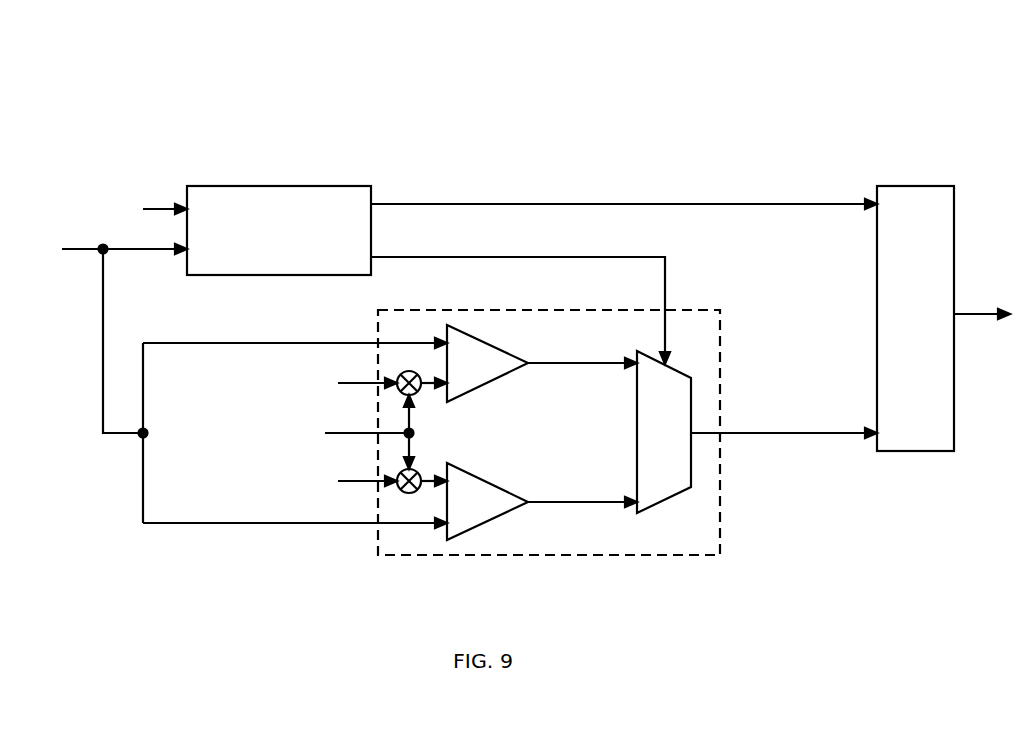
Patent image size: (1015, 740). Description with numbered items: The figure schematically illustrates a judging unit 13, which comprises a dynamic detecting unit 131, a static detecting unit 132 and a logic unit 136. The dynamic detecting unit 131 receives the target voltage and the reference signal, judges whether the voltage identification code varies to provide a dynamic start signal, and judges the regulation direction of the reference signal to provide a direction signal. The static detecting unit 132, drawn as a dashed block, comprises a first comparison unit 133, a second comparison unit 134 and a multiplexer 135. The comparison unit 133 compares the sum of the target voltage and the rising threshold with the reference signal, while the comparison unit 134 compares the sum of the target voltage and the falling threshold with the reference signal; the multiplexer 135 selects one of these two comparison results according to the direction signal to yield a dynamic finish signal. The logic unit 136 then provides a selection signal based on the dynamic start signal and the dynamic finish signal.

The judging unit 13 is at (868, 73).
The dynamic detecting unit 131 is at (261, 269).
The static detecting unit 132 is at (673, 309).
The comparison unit 133 is at (497, 375).
The comparison unit 134 is at (497, 513).
The multiplexer 135 is at (646, 510).
The logic unit 136 is at (897, 357).